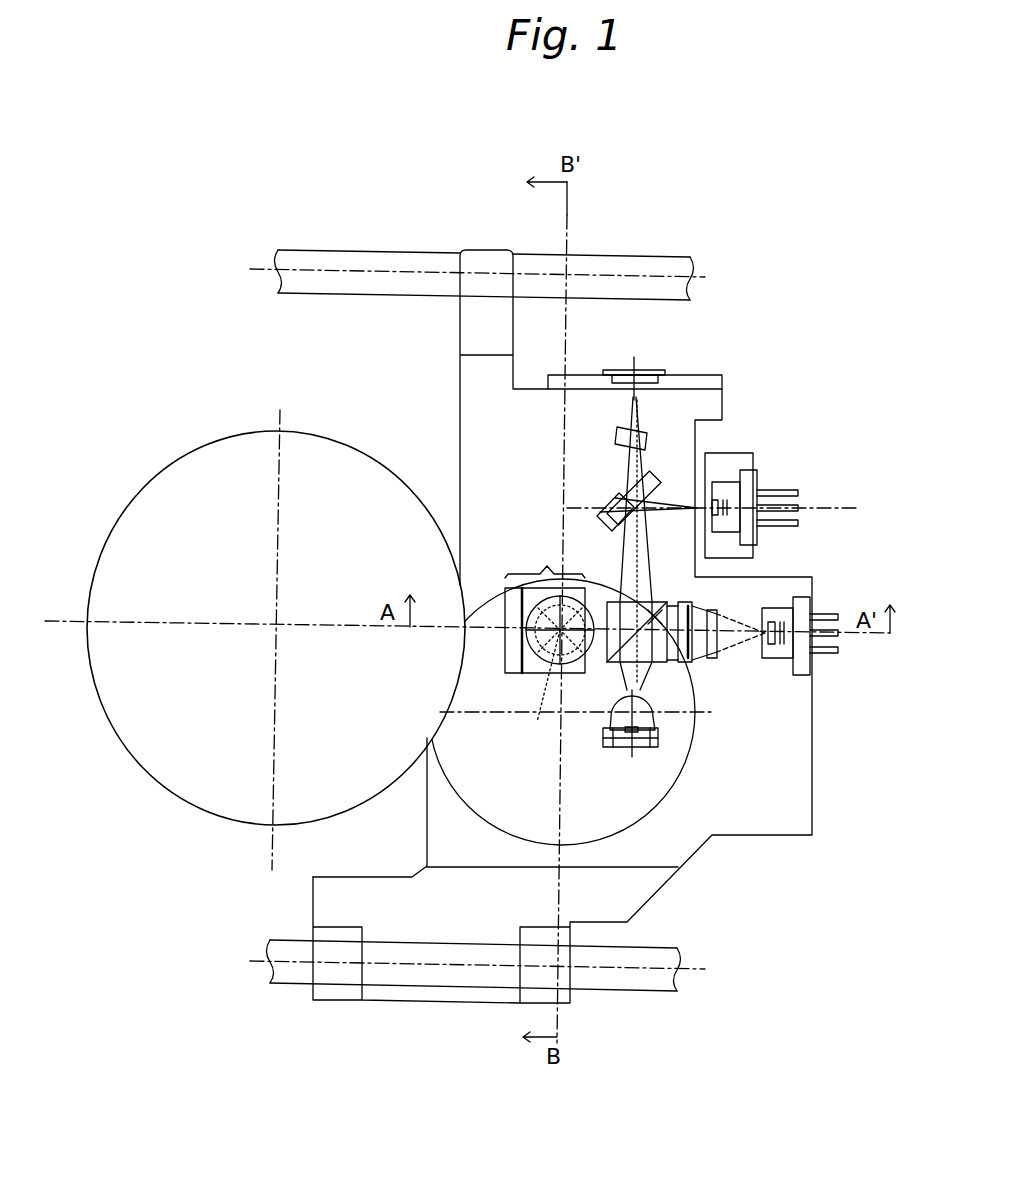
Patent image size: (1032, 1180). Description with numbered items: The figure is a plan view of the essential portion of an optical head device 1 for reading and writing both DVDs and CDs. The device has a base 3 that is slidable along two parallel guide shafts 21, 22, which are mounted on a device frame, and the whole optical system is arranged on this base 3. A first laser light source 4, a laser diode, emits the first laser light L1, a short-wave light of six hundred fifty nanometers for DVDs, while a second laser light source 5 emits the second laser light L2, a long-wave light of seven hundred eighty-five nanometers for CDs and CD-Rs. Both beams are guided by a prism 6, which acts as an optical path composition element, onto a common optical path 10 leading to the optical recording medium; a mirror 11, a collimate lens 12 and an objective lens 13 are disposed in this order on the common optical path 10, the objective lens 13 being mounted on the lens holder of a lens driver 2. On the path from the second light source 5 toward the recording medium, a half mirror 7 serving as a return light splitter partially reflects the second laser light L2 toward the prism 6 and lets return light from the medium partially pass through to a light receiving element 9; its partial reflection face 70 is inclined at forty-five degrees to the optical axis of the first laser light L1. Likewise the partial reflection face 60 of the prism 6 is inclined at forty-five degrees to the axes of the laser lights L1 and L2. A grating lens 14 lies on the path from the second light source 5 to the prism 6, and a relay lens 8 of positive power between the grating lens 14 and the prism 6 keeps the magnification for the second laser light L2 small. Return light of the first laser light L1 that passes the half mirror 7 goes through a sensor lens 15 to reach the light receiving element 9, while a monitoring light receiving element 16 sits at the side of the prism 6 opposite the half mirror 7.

The optical head device 1 is at (756, 233).
The lens driver 2 is at (640, 815).
The base 3 is at (459, 388).
The first laser light source 4 is at (750, 481).
The second laser light source 5 is at (797, 662).
The prism 6 is at (680, 662).
The half mirror 7 is at (605, 505).
The partial reflection face 70 is at (624, 499).
The relay lens 8 is at (692, 600).
The light receiving element 9 is at (650, 370).
The common optical path 10 is at (545, 606).
The mirror 11 is at (513, 673).
The collimate lens 12 is at (541, 691).
The objective lens 13 is at (527, 640).
The grating lens 14 is at (712, 665).
The sensor lens 15 is at (647, 438).
The light receiving element 16 is at (630, 752).
The guide shaft 21 is at (317, 248).
The guide shaft 22 is at (453, 993).
The partial reflection face 60 is at (613, 672).
The first laser light L1 is at (697, 500).
The second laser light L2 is at (745, 623).